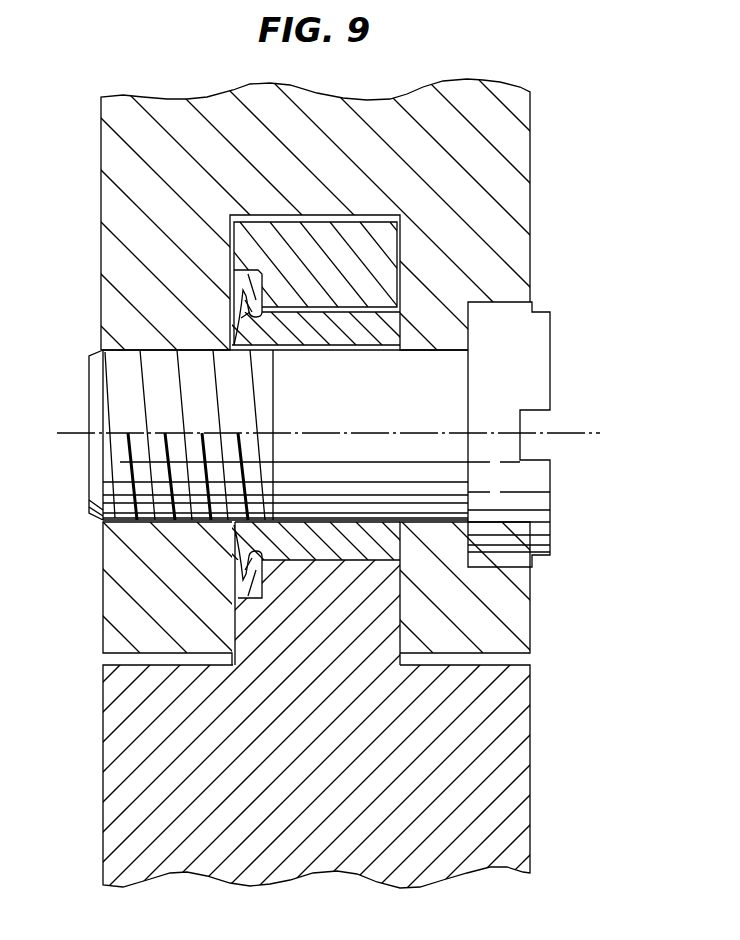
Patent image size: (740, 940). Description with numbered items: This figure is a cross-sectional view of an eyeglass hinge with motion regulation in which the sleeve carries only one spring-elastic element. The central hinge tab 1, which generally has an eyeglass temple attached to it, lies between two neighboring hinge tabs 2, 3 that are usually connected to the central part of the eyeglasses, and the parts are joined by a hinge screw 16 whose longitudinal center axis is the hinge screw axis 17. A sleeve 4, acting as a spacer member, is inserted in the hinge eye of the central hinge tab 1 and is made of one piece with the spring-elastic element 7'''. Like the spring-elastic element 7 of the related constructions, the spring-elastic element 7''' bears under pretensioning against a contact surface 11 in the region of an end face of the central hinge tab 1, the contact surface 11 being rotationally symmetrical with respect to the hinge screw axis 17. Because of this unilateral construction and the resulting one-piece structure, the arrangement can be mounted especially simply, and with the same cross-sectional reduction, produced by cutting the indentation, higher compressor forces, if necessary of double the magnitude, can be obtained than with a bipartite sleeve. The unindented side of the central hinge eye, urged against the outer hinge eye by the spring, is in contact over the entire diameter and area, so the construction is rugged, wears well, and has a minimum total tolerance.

The central hinge tab 1 is at (392, 250).
The neighboring hinge tab 2 is at (118, 618).
The neighboring hinge tab 3 is at (525, 635).
The sleeve 4 is at (356, 328).
The spring-elastic element 7''' is at (221, 307).
The spring-elastic element 7 is at (221, 307).
The contact surface 11 is at (263, 572).
The hinge screw 16 is at (535, 342).
The hinge screw axis 17 is at (580, 434).